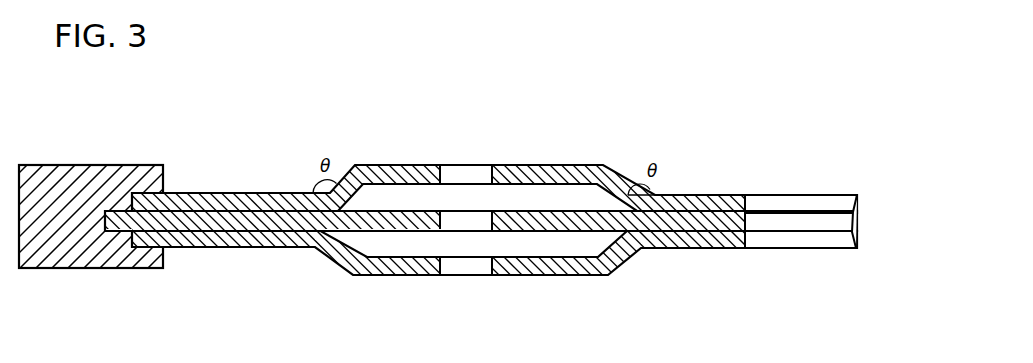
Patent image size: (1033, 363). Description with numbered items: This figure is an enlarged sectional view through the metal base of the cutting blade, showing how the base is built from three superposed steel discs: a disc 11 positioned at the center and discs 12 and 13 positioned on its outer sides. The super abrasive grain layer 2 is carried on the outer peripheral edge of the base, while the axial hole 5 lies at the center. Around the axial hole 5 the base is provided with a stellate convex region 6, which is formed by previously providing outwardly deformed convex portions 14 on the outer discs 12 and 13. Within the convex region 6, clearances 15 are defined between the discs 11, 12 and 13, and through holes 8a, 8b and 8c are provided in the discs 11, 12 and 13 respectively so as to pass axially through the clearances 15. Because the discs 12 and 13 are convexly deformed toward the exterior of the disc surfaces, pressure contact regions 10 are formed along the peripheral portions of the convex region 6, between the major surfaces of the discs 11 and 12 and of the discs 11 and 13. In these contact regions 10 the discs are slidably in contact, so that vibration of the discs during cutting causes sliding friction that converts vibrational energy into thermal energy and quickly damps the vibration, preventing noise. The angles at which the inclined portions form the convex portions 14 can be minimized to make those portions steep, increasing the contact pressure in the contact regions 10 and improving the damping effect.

The super abrasive grain layer 2 is at (93, 268).
The axial hole 5 is at (790, 223).
The convex region 6 is at (528, 160).
The through hole 8a is at (455, 220).
The through hole 8b is at (473, 177).
The through hole 8c is at (482, 270).
The contact region 10 is at (305, 192).
The disc 11 is at (268, 231).
The disc 12 is at (237, 192).
The disc 13 is at (233, 248).
The convex portion 14 is at (552, 165).
The clearance 15 is at (385, 200).